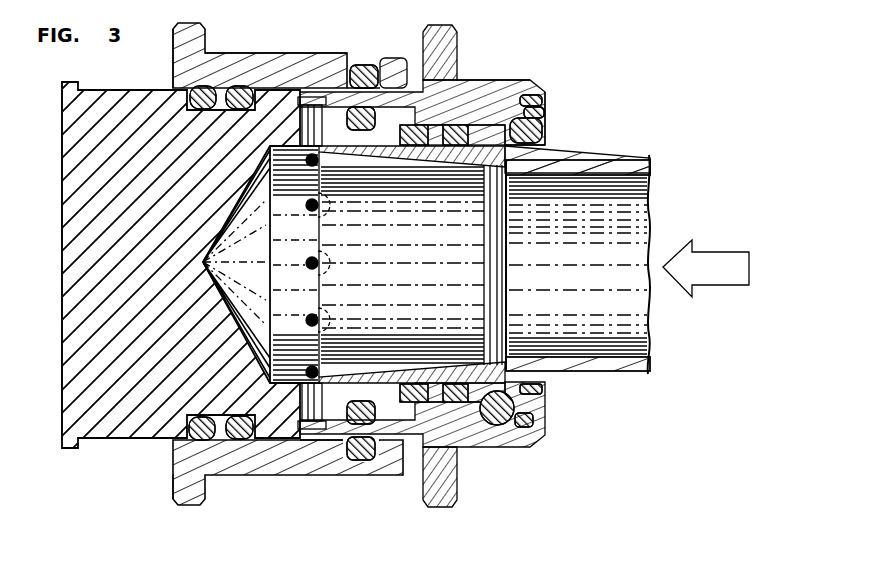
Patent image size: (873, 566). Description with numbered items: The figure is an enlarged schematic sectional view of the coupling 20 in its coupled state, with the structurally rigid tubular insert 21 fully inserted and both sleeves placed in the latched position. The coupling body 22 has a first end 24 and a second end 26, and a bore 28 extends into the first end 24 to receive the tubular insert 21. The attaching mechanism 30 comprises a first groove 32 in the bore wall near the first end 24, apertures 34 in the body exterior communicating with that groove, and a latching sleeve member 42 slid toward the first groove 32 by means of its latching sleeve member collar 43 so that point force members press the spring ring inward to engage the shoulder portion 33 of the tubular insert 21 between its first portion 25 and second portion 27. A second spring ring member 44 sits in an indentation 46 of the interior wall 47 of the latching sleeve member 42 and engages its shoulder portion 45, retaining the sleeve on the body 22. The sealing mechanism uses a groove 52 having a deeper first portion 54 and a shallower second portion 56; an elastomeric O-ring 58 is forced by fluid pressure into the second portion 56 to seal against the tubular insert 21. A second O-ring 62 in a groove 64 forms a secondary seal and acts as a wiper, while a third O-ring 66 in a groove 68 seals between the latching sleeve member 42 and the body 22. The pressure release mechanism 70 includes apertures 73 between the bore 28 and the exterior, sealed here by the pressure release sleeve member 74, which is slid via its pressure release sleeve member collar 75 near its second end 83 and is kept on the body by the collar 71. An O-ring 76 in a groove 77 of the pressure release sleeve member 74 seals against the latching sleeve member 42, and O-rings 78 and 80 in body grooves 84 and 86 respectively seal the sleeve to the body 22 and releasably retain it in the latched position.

The coupling 20 is at (622, 84).
The tubular insert 21 is at (597, 375).
The body 22 is at (150, 297).
The first end 24 is at (547, 128).
The first portion 25 is at (547, 393).
The second end 26 is at (72, 138).
The second portion 27 is at (548, 376).
The bore 28 is at (312, 440).
The attaching mechanism 30 is at (470, 72).
The first groove 32 is at (548, 143).
The shoulder portion 33 is at (530, 150).
The apertures 34 is at (548, 96).
The latching sleeve member 42 is at (488, 82).
The latching sleeve member collar 43 is at (440, 40).
The second spring ring member 44 is at (546, 445).
The shoulder portion 45 is at (530, 96).
The indentation 46 is at (546, 113).
The interior wall 47 is at (458, 470).
The groove 52 is at (383, 372).
The first portion 54 is at (350, 372).
The second portion 56 is at (405, 372).
The elastomeric O-ring 58 is at (411, 478).
The second O-ring 62 is at (428, 372).
The groove 64 is at (480, 372).
The third O-ring 66 is at (346, 108).
The groove 68 is at (392, 66).
The pressure release mechanism 70 is at (278, 52).
The collar 71 is at (62, 82).
The apertures 73 is at (318, 146).
The pressure release sleeve member 74 is at (230, 60).
The pressure release sleeve member collar 75 is at (185, 25).
The O-ring 76 is at (352, 70).
The groove 77 is at (365, 66).
The O-ring 78 is at (237, 442).
The O-ring 80 is at (188, 440).
The second end 83 is at (180, 47).
The groove 84 is at (302, 477).
The groove 86 is at (190, 432).